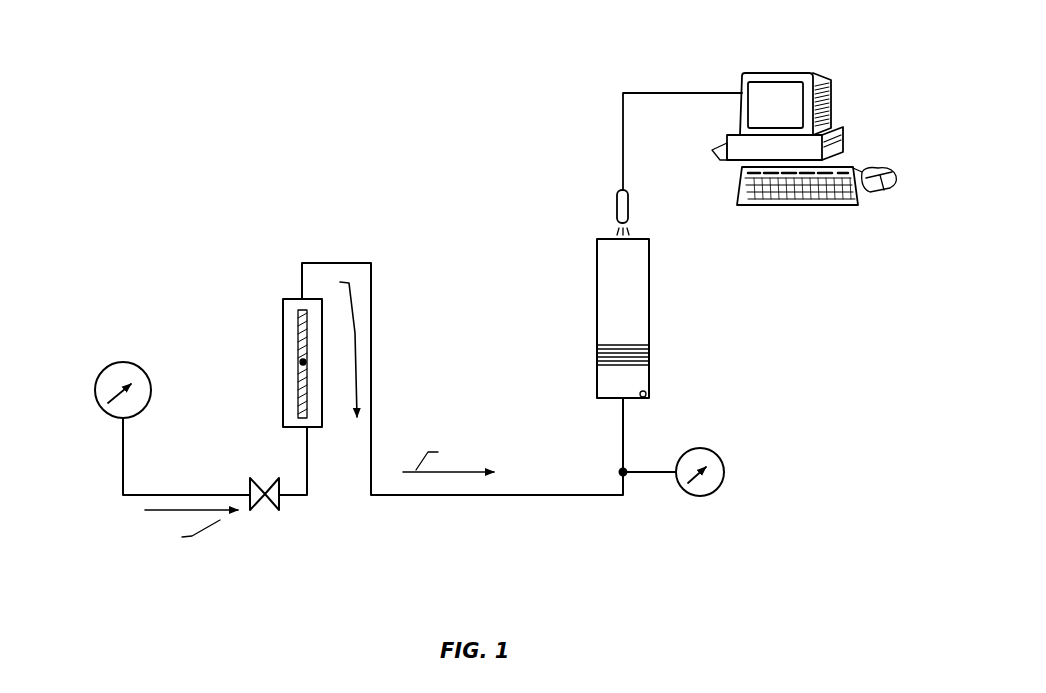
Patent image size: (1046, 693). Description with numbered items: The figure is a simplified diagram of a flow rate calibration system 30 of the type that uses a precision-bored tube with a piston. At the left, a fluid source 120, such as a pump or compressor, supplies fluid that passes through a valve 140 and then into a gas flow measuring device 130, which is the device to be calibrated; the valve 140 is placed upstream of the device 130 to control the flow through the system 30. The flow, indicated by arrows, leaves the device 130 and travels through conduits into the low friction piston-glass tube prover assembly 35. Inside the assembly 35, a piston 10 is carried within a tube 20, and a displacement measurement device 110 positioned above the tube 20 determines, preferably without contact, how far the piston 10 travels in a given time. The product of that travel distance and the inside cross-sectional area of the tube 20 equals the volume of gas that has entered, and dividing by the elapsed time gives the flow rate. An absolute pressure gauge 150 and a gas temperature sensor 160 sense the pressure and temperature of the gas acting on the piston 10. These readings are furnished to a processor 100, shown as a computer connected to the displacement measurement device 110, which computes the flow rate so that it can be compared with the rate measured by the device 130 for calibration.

The flow rate calibration system 30 is at (220, 128).
The processor 100 is at (830, 82).
The displacement measurement device 110 is at (617, 216).
The low friction piston-glass tube prover assembly 35 is at (587, 314).
The tube 20 is at (597, 302).
The piston 10 is at (597, 358).
The gas temperature sensor 160 is at (649, 398).
The absolute pressure gauge 150 is at (690, 493).
The fluid source 120 is at (105, 367).
The gas flow measuring device 130 is at (284, 333).
The valve 140 is at (276, 511).